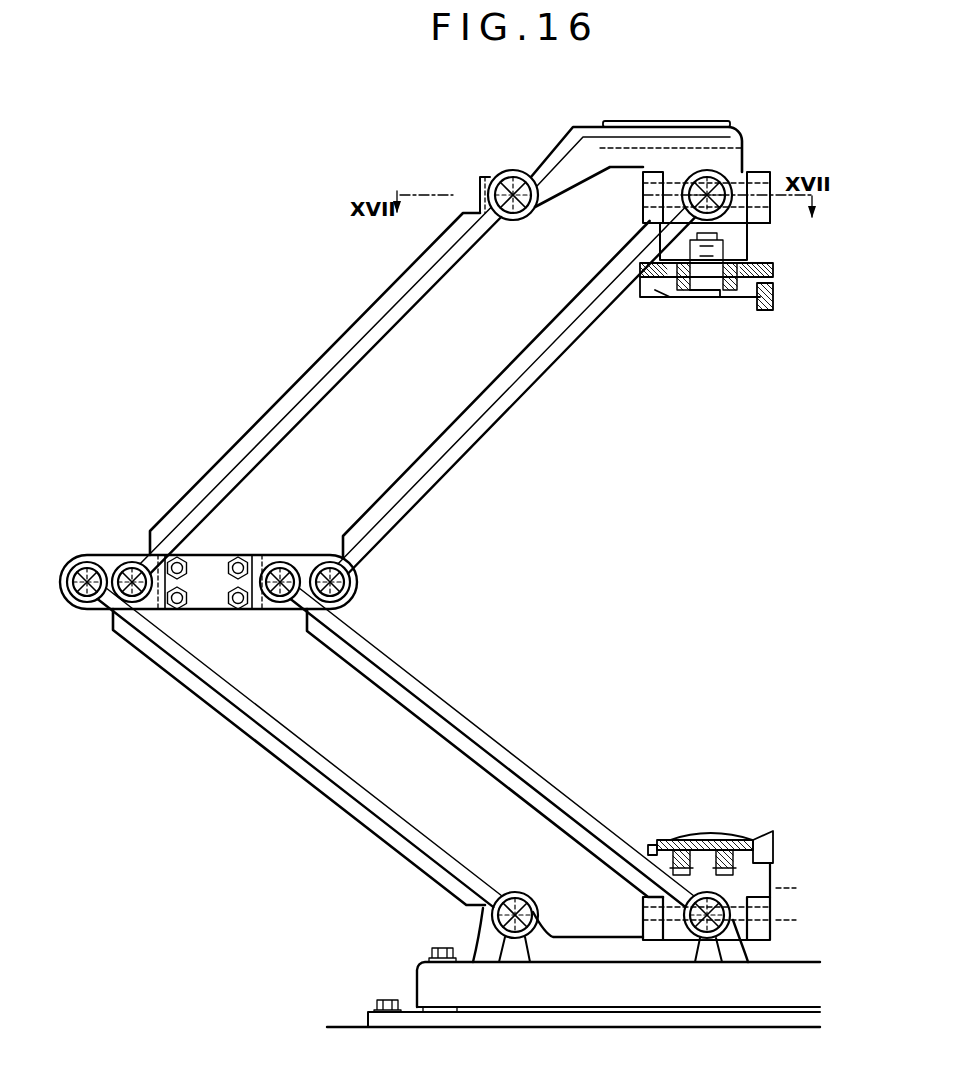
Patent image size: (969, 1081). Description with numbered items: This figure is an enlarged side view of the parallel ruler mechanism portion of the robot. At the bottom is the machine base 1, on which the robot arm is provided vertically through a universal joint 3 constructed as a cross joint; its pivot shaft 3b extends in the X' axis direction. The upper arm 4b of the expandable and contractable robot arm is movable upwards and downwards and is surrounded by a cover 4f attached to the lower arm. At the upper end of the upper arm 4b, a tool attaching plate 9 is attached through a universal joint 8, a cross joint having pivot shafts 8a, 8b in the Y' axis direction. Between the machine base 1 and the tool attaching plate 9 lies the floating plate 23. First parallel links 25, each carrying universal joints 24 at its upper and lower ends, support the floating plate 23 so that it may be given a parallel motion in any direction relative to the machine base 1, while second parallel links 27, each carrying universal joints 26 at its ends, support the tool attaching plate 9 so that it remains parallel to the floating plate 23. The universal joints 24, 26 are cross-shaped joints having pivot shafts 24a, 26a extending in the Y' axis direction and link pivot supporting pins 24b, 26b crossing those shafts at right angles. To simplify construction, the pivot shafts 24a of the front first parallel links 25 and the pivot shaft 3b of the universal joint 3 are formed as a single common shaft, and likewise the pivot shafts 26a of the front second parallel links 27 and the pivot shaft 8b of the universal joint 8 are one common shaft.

The machine base 1 is at (520, 988).
The universal joint 3 is at (738, 887).
The pivot shaft 3b is at (707, 941).
The upper arm 4b is at (755, 298).
The cover 4f is at (778, 295).
The universal joint 8 is at (749, 166).
The pivot shaft 8a is at (773, 173).
The pivot shaft 8b is at (750, 224).
The tool attaching plate 9 is at (677, 122).
The floating plate 23 is at (213, 593).
The universal joint 24 is at (90, 613).
The pivot shaft 24a is at (297, 563).
The link pivot supporting pin 24b is at (280, 560).
The first parallel link 25 is at (350, 781).
The universal joint 26 is at (494, 171).
The pivot shaft 26a is at (517, 170).
The link pivot supporting pin 26b is at (515, 221).
The second parallel link 27 is at (506, 397).